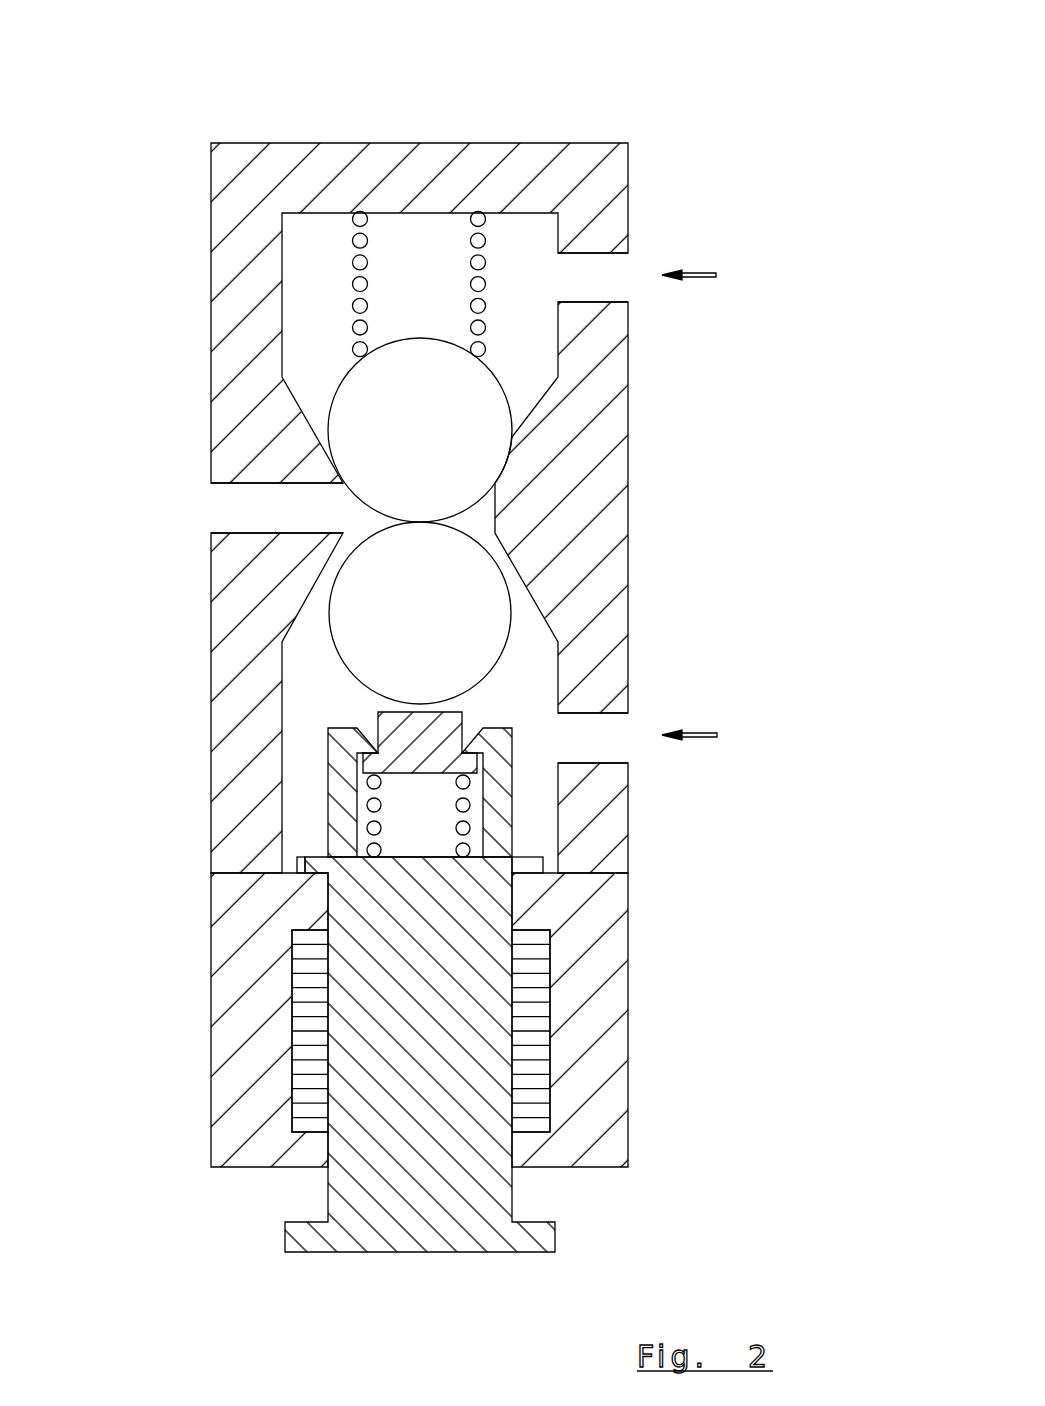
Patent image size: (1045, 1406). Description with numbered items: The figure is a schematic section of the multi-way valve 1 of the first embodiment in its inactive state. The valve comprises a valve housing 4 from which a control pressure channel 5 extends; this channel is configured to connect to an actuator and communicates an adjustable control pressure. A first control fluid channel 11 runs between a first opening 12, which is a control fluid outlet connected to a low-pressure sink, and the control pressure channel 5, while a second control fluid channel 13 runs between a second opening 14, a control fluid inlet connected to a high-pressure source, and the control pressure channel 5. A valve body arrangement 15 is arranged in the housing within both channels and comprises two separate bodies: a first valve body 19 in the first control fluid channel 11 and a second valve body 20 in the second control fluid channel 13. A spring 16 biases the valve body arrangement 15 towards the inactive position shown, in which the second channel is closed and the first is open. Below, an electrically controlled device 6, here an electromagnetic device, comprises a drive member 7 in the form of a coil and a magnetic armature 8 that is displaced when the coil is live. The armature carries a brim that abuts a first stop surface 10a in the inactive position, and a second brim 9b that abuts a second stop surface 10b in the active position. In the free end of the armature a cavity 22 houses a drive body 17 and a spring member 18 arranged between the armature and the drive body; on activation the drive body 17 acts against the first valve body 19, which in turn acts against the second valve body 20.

The multi-way valve 1 is at (497, 122).
The valve housing 4 is at (232, 313).
The control pressure channel 5 is at (267, 507).
The electrically controlled device 6 is at (211, 927).
The drive member 7 is at (298, 1045).
The armature 8 is at (327, 1193).
The second brim/flange 9b is at (533, 862).
The first stop surface 10a is at (303, 860).
The second stop surface 10b is at (538, 1167).
The first control fluid channel 11 is at (590, 733).
The first opening 12 is at (628, 745).
The second control fluid channel 13 is at (592, 274).
The second opening 14 is at (628, 285).
The valve body arrangement 15 is at (327, 619).
The spring 16 is at (362, 245).
The drive body 17 is at (407, 735).
The spring member 18 is at (375, 805).
The first valve body 19 is at (465, 578).
The second valve body 20 is at (453, 450).
The cavity 22 is at (420, 825).